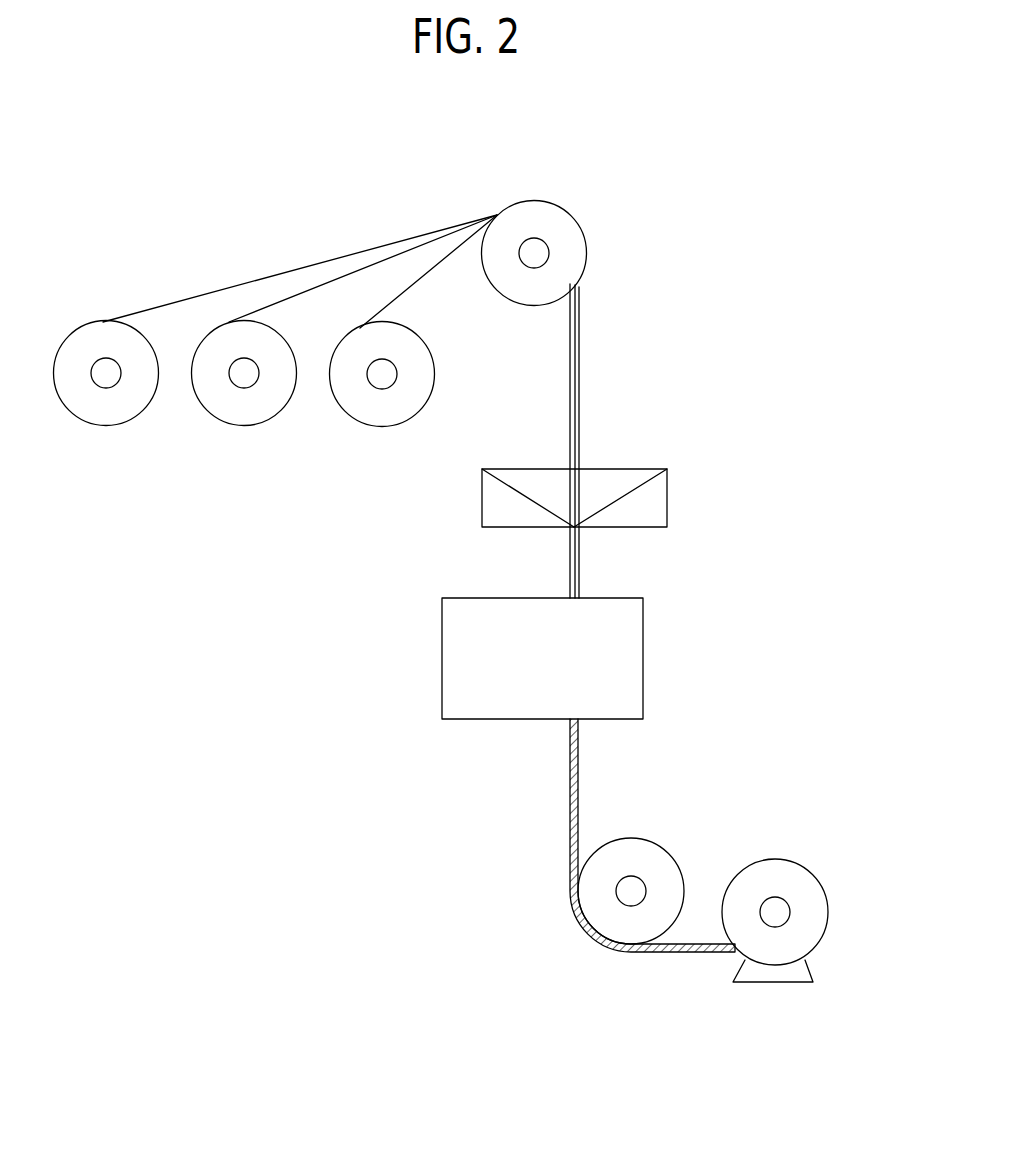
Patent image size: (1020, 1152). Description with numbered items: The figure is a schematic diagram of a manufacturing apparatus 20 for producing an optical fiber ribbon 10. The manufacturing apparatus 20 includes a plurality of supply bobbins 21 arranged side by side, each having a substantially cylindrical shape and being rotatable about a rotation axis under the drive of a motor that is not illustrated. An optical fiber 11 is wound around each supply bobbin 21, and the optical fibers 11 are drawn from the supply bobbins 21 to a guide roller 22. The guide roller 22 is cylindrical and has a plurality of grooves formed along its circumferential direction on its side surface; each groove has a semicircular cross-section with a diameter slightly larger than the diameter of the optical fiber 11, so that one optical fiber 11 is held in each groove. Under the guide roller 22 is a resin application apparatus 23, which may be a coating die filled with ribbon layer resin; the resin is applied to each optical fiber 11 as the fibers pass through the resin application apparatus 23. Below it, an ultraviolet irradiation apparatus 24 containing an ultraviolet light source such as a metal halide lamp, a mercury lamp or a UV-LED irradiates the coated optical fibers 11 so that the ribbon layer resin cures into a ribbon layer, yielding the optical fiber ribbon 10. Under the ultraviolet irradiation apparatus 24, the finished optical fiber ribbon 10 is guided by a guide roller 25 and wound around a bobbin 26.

The manufacturing apparatus 20 is at (894, 194).
The supply bobbin 21 is at (103, 425).
The optical fiber 11 is at (217, 290).
The guide roller 22 is at (565, 210).
The resin application apparatus 23 is at (667, 495).
The ultraviolet irradiation apparatus 24 is at (643, 657).
The optical fiber ribbon 10 is at (578, 792).
The guide roller 25 is at (663, 840).
The bobbin 26 is at (800, 858).